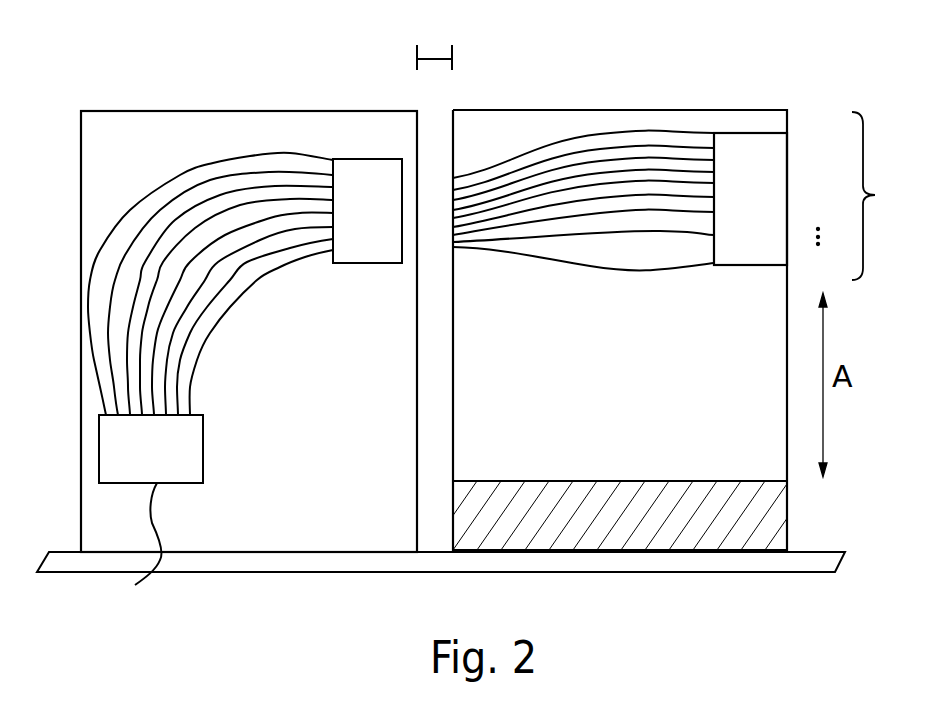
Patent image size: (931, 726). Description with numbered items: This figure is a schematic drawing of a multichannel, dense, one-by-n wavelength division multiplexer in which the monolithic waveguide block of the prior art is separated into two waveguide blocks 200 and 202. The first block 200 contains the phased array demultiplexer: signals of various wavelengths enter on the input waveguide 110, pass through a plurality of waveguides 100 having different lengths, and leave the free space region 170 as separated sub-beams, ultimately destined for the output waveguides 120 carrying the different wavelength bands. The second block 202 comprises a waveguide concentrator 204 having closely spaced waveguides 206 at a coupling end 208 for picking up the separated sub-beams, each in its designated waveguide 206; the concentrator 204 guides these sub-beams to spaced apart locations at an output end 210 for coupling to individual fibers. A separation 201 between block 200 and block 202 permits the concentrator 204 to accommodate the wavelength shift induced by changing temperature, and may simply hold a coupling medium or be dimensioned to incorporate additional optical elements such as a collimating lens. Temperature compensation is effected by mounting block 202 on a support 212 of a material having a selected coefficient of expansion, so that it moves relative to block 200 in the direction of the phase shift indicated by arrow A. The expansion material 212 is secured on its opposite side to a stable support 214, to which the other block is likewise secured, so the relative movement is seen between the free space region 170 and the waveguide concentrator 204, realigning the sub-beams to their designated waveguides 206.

The waveguides 100 is at (200, 165).
The input waveguide 110 is at (163, 515).
The output waveguides 120 is at (877, 194).
The free space region 170 is at (392, 227).
The waveguide block 200 is at (363, 415).
The separation 201 is at (428, 55).
The waveguide block 202 is at (640, 415).
The waveguide concentrator 204 is at (561, 273).
The waveguides 206 is at (540, 147).
The coupling end 208 is at (453, 183).
The output end 210 is at (787, 119).
The support 212 is at (777, 530).
The stable support 214 is at (687, 562).